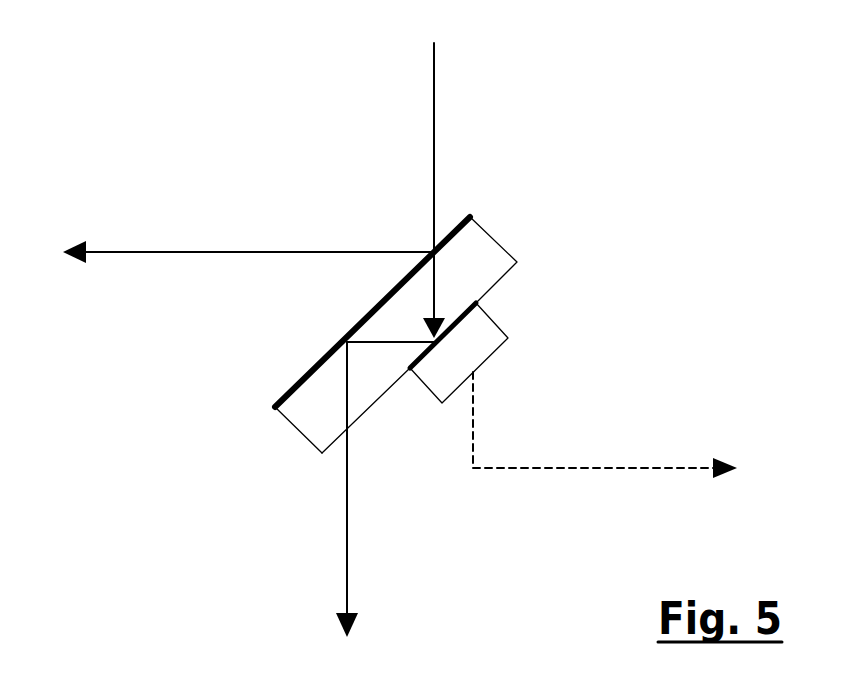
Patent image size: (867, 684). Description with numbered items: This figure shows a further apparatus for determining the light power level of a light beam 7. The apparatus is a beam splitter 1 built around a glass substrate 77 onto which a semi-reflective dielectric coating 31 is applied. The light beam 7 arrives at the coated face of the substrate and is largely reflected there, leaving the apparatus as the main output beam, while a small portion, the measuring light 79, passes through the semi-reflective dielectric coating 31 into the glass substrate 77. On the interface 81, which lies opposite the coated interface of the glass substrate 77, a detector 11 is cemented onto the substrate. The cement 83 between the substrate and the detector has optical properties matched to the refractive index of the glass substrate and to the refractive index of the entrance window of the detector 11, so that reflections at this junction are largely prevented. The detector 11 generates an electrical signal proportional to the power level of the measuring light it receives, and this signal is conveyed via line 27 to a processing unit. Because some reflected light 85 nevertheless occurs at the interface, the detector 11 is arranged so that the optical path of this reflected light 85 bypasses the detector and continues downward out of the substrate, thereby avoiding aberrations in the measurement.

The beam splitter 1 is at (540, 203).
The light beam 7 is at (435, 113).
The detector 11 is at (475, 335).
The line 27 is at (580, 467).
The semi-reflective dielectric coating 31 is at (447, 228).
The glass substrate 77 is at (317, 413).
The measuring light 79 is at (434, 305).
The interface 81 is at (388, 386).
The cement 83 is at (466, 312).
The reflected light 85 is at (348, 495).